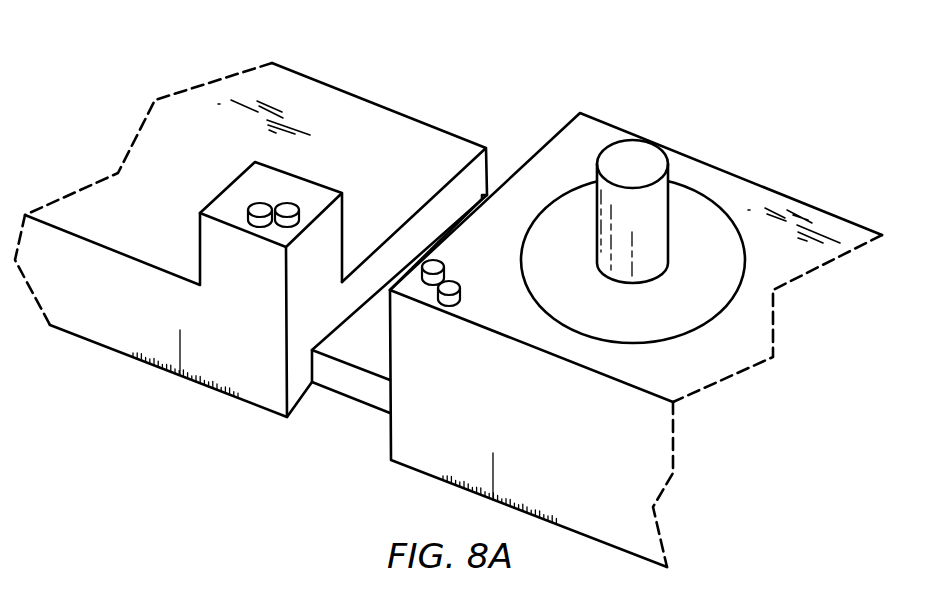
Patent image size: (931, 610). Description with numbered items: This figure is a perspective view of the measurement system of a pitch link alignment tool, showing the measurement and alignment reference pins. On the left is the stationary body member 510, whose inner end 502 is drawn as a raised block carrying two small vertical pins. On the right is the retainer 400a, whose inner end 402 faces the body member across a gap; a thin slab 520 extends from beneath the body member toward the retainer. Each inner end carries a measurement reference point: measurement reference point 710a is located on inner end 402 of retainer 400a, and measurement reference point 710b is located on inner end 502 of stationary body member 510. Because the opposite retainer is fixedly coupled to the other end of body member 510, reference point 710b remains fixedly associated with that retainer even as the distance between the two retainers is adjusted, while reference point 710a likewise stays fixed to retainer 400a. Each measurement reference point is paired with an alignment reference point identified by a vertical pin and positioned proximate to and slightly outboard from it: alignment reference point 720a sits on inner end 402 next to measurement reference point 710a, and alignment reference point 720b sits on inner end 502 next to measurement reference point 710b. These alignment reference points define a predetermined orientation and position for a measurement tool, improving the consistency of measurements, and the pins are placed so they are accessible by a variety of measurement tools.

The stationary body member 510 is at (350, 100).
The inner end of stationary body member 502 is at (279, 232).
The alignment slab 520 is at (373, 362).
The inner end of retainer 402 is at (415, 290).
The retainer 400a is at (738, 184).
The measurement reference point 710a is at (436, 270).
The alignment reference point 720a is at (454, 296).
The measurement reference point 710b is at (289, 208).
The alignment reference point 720b is at (257, 206).